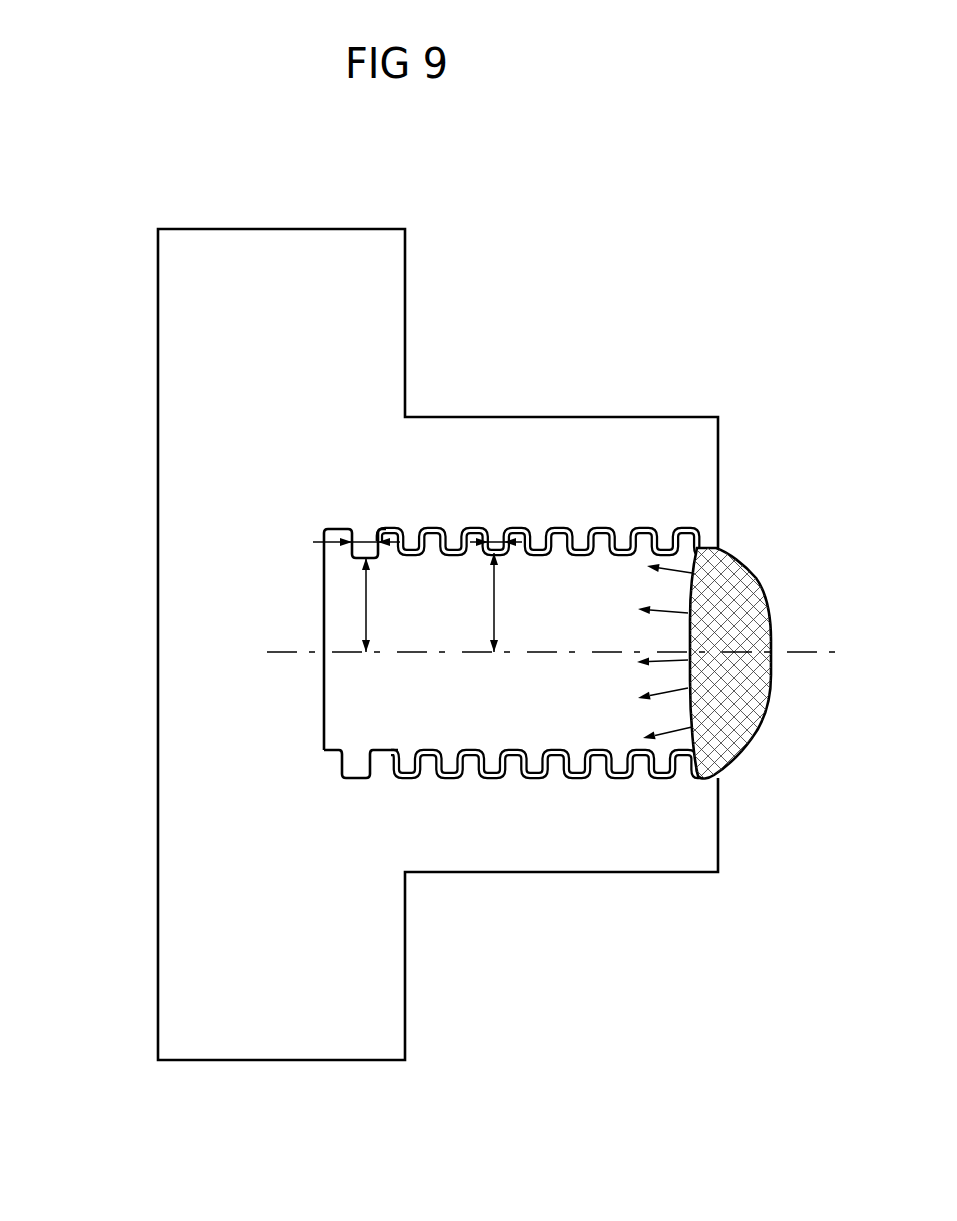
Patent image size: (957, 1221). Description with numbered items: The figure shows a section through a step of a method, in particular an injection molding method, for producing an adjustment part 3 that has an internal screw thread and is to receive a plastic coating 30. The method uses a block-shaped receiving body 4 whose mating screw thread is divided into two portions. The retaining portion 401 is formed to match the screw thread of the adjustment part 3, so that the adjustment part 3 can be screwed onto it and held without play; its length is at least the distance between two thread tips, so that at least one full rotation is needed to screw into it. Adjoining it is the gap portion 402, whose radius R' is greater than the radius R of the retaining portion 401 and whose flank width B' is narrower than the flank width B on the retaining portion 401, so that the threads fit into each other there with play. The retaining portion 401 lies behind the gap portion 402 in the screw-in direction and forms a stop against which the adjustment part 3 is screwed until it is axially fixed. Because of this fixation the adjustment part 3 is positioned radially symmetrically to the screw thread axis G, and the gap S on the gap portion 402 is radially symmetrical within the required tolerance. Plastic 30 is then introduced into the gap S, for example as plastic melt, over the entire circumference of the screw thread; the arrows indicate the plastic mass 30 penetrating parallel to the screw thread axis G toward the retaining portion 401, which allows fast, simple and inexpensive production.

The receiving body 4 is at (134, 814).
The retaining portion 401 is at (403, 518).
The gap portion 402 is at (718, 518).
The adjustment part 3 is at (698, 665).
The plastic coating 30 is at (728, 748).
The gap S is at (703, 540).
The screw thread axis G is at (568, 650).
The flank width B is at (337, 524).
The flank width B' is at (496, 501).
The radius R is at (375, 605).
The radius R' is at (506, 602).